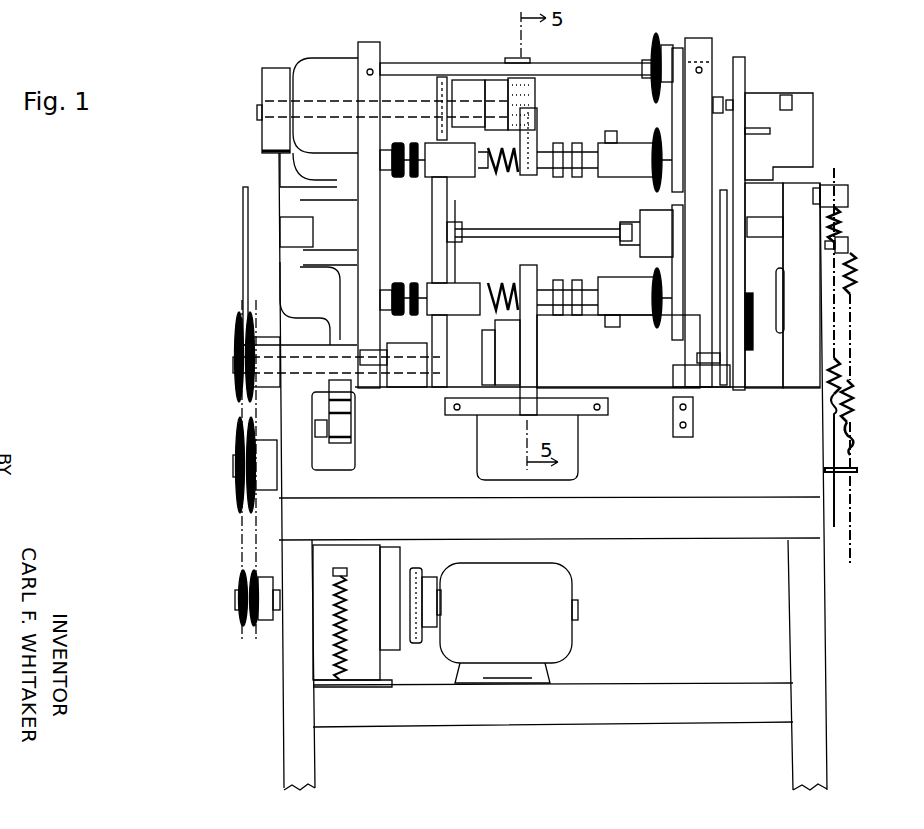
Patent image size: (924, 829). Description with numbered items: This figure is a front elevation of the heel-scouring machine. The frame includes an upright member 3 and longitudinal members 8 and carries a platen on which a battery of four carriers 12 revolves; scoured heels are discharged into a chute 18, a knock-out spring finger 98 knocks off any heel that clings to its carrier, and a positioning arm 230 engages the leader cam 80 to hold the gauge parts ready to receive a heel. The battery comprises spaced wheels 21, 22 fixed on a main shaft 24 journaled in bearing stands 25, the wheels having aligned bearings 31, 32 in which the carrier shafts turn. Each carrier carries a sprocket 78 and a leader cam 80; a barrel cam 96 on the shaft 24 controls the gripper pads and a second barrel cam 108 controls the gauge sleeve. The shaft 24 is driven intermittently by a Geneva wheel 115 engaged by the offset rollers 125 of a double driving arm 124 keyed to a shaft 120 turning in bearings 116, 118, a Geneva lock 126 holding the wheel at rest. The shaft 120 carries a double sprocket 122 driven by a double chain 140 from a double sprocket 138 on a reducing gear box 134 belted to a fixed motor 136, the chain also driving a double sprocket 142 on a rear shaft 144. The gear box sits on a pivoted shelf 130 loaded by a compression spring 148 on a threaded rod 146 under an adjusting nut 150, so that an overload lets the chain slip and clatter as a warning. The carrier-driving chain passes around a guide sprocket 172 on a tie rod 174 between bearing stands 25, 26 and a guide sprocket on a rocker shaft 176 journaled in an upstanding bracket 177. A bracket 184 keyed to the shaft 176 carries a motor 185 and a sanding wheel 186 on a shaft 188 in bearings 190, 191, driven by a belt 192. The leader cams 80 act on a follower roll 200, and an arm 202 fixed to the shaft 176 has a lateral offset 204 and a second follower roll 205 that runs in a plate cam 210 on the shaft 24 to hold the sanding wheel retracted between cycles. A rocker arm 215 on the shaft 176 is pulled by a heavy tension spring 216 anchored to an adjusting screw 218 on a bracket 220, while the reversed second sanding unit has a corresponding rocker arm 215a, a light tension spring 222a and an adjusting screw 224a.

The upright member 3 is at (283, 667).
The longitudinal member 8 is at (694, 708).
The carrier 12 is at (552, 140).
The chute 18 is at (478, 452).
The wheel 21 is at (445, 195).
The wheel 22 is at (608, 197).
The main battery shaft 24 is at (745, 228).
The bearing stand 25 is at (358, 48).
The bearing stand 26 is at (712, 40).
The bearing 31 is at (457, 168).
The bearing 32 is at (640, 165).
The sprocket 78 is at (652, 136).
The leader cam 80 is at (670, 186).
The barrel cam 96 is at (403, 258).
The knock-out spring finger 98 is at (537, 364).
The barrel cam 108 is at (673, 253).
The Geneva wheel 115 is at (342, 262).
The bearing 116 is at (285, 318).
The bearing 118 is at (397, 368).
The shaft 120 is at (235, 373).
The double sprocket 122 is at (235, 333).
The double driving arm 124 is at (333, 425).
The offset roller 125 is at (348, 437).
The Geneva lock 126 is at (342, 403).
The shelf 130 is at (606, 683).
The reducing gear box 134 is at (353, 566).
The motor 136 is at (518, 635).
The double sprocket 138 is at (242, 566).
The double chain 140 is at (240, 527).
The double sprocket 142 is at (237, 440).
The shaft 144 is at (237, 466).
The threaded rod 146 is at (341, 603).
The compression spring 148 is at (341, 623).
The adjusting nut 150 is at (340, 578).
The guide sprocket 172 is at (660, 40).
The tie rod 174 is at (621, 63).
The rocker shaft 176 is at (852, 195).
The upstanding bracket 177 is at (812, 311).
The bracket 184 is at (280, 172).
The motor 185 is at (338, 91).
The sanding wheel 186 is at (535, 89).
The shaft 188 is at (314, 114).
The bearing 190 is at (262, 99).
The bearing 191 is at (464, 64).
The belt 192 is at (433, 90).
The cam follower roll 200 is at (673, 106).
The second arm 202 is at (768, 142).
The lateral offset 204 is at (770, 131).
The second follower roll 205 is at (740, 57).
The plate cam 210 is at (738, 190).
The rocker arm 215 is at (828, 182).
The rocker arm 215a is at (848, 242).
The tension spring 216 is at (838, 214).
The adjusting screw 218 is at (832, 428).
The bracket 220 is at (850, 460).
The tension spring 222a is at (849, 271).
The adjusting screw 224a is at (852, 442).
The positioning arm 230 is at (679, 373).